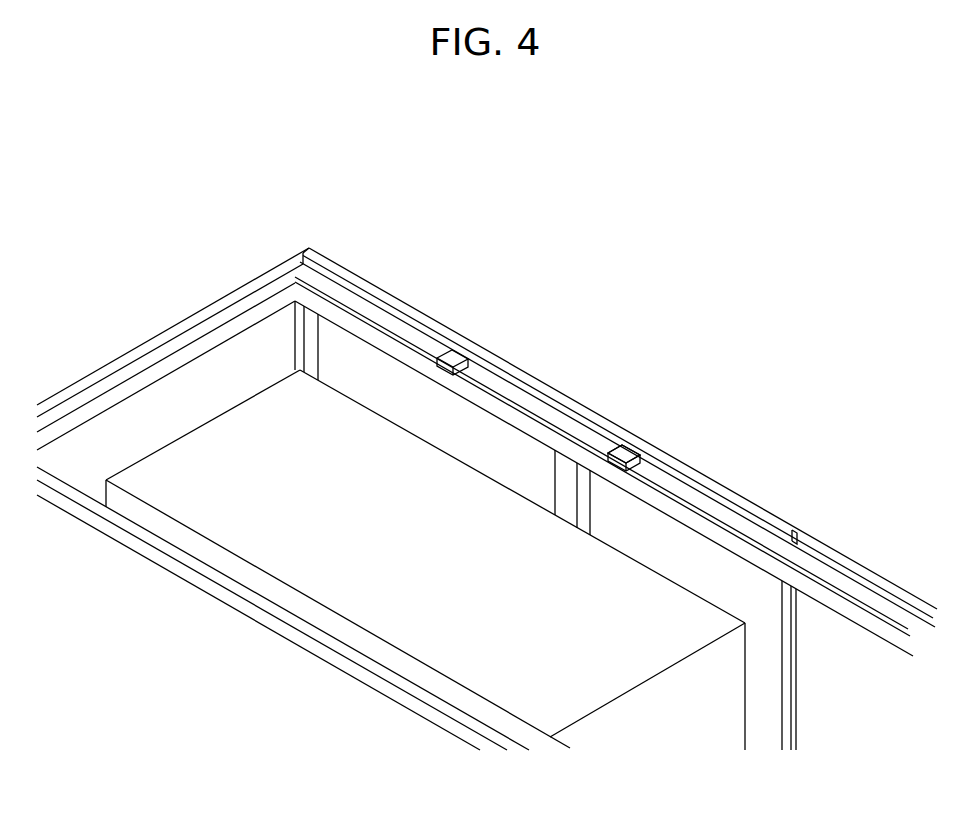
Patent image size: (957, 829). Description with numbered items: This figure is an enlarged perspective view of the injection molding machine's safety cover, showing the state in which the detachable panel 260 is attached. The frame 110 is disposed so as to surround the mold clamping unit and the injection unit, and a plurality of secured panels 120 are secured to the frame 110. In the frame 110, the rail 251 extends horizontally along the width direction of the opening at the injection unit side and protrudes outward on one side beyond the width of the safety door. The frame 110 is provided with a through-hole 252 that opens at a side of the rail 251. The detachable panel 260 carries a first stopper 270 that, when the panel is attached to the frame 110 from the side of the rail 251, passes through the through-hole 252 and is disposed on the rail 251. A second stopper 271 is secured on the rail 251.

The frame 110 is at (135, 367).
The secured panel 120 is at (187, 318).
The rail 251 is at (318, 277).
The through-hole 252 is at (608, 453).
The detachable panel 260 is at (748, 500).
The first stopper 270 is at (633, 450).
The second stopper 271 is at (452, 355).